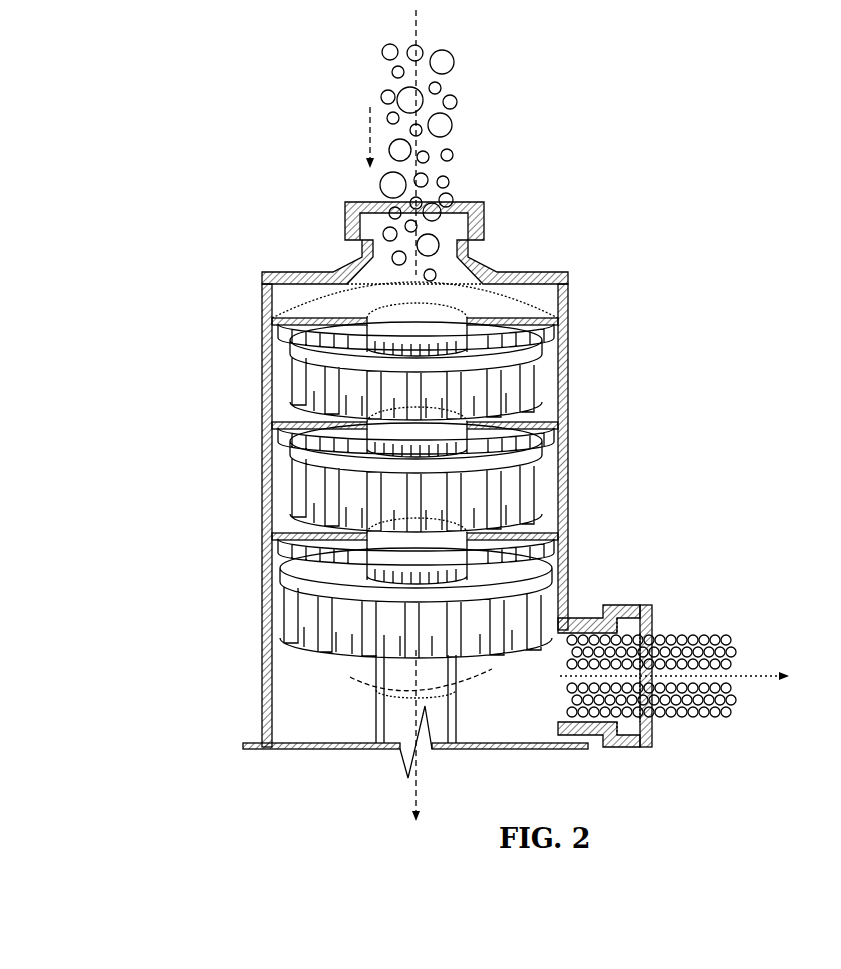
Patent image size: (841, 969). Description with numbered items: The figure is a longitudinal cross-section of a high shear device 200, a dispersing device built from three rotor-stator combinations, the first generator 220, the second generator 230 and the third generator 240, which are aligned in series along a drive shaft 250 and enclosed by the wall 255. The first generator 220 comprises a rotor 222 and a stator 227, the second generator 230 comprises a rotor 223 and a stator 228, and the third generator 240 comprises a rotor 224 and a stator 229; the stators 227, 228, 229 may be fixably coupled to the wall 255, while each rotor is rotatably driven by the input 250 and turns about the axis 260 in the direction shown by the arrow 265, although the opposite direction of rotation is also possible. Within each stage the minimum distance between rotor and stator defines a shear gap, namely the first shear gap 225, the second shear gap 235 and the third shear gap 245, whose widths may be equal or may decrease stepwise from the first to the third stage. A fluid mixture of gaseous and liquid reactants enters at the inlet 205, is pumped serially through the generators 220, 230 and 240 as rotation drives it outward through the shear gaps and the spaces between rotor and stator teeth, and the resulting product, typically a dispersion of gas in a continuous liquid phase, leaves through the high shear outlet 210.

The high shear device 200 is at (210, 163).
The inlet 205 is at (452, 188).
The outlet 210 is at (742, 682).
The first generator 220 is at (413, 350).
The rotor 222 is at (552, 355).
The rotor 223 is at (548, 462).
The rotor 224 is at (556, 572).
The first shear gap 225 is at (482, 340).
The stator 227 is at (535, 308).
The stator 228 is at (538, 420).
The stator 229 is at (537, 520).
The second generator 230 is at (413, 459).
The second shear gap 235 is at (480, 442).
The third generator 240 is at (413, 575).
The third shear gap 245 is at (484, 552).
The drive shaft 250 is at (380, 725).
The wall 255 is at (262, 282).
The axis of rotation 260 is at (413, 787).
The arrow 265 is at (493, 668).